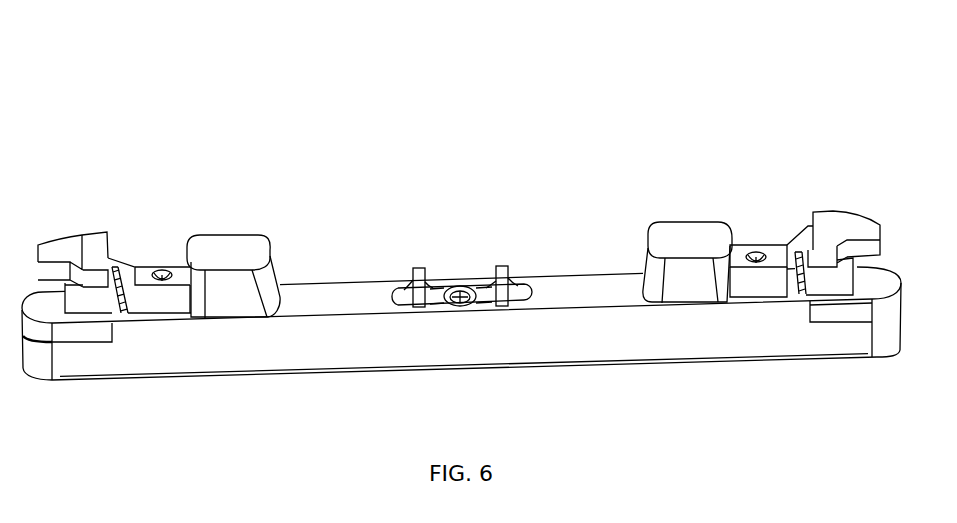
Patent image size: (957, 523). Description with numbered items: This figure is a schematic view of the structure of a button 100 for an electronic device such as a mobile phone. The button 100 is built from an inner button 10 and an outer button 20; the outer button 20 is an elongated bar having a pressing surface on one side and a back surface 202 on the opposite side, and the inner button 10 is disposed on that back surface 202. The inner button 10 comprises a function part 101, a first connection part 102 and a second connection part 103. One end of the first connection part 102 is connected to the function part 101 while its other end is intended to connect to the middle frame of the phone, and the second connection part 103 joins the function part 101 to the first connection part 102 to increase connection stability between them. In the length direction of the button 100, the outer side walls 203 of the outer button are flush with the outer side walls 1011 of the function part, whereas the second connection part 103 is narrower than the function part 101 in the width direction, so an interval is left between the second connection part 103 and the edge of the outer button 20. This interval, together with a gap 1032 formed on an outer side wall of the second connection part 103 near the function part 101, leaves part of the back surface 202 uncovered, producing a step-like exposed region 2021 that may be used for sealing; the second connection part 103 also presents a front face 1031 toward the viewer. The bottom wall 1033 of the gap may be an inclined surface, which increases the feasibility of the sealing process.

The button 100 is at (119, 64).
The inner button 10 is at (85, 187).
The function part 101 is at (203, 244).
The first connection part 102 is at (84, 256).
The second connection part 103 is at (152, 264).
The outer side wall of the function part 1011 is at (694, 290).
The front face of connecting plate 1031 is at (750, 283).
The gap 1032 is at (188, 317).
The bottom wall of the gap 1033 is at (143, 303).
The outer button 20 is at (480, 353).
The back surface 202 is at (332, 292).
The outer side wall of the outer button 203 is at (577, 352).
The exposed region 2021 is at (781, 304).